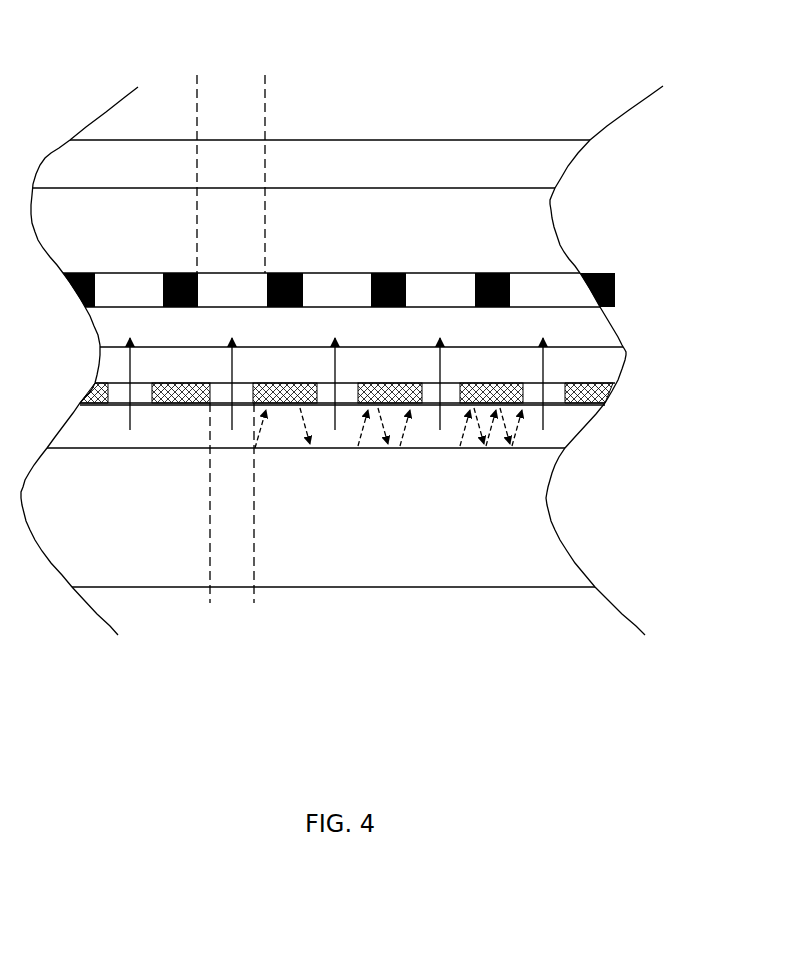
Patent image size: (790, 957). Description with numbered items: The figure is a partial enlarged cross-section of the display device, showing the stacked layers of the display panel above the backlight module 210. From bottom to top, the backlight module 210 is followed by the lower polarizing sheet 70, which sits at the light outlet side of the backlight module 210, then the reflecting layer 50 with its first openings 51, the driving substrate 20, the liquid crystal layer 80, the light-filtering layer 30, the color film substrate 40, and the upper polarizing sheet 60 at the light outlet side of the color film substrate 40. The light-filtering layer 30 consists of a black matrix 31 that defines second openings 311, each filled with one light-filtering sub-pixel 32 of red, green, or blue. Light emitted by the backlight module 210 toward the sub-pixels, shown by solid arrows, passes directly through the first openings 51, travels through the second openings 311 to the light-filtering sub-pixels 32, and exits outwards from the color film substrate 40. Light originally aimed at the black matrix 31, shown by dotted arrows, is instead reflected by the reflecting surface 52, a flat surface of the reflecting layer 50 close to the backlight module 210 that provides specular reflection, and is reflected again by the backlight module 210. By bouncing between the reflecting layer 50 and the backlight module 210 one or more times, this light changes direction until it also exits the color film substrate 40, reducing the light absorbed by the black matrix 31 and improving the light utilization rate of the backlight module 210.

The driving substrate 20 is at (605, 365).
The light-filtering layer 30 is at (339, 156).
The black matrix 31 is at (496, 273).
The light-filtering sub-pixel 32 is at (361, 280).
The second opening 311 is at (197, 75).
The color film substrate 40 is at (520, 223).
The reflecting layer 50 is at (605, 388).
The first opening 51 is at (210, 603).
The reflecting surface 52 is at (572, 407).
The upper polarizing sheet 60 is at (530, 163).
The lower polarizing sheet 70 is at (560, 428).
The liquid crystal layer 80 is at (600, 332).
The backlight module 210 is at (523, 533).